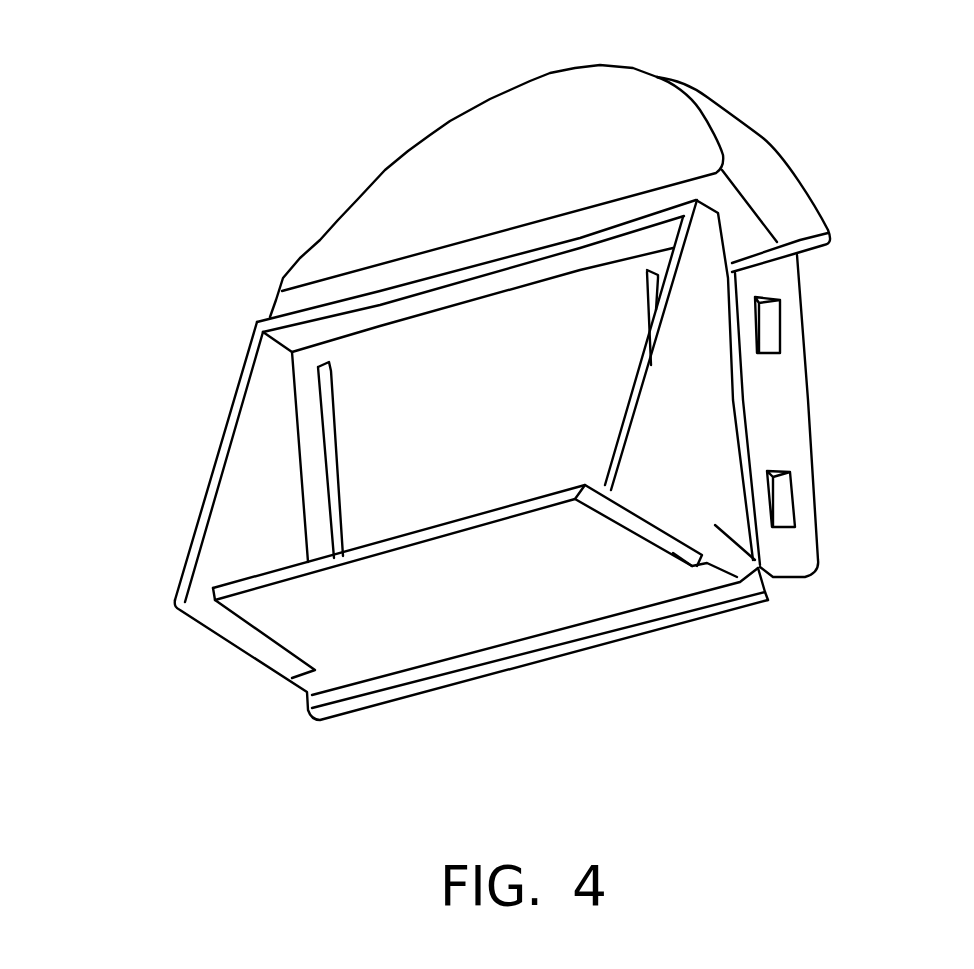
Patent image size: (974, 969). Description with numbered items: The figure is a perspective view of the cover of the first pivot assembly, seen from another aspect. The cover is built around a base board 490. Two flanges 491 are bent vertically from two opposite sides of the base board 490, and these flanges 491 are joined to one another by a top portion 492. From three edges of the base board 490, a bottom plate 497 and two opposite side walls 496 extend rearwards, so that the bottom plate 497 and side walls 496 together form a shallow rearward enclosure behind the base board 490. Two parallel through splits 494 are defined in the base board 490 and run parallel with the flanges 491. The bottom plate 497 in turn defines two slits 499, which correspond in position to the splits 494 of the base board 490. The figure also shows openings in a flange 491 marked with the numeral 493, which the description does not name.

The base board 490 is at (403, 380).
The flanges 491 is at (785, 400).
The top portion 492 is at (717, 118).
The openings 493 is at (787, 503).
The through splits 494 is at (327, 482).
The side walls 496 is at (788, 578).
The bottom plate 497 is at (407, 630).
The slits 499 is at (673, 553).